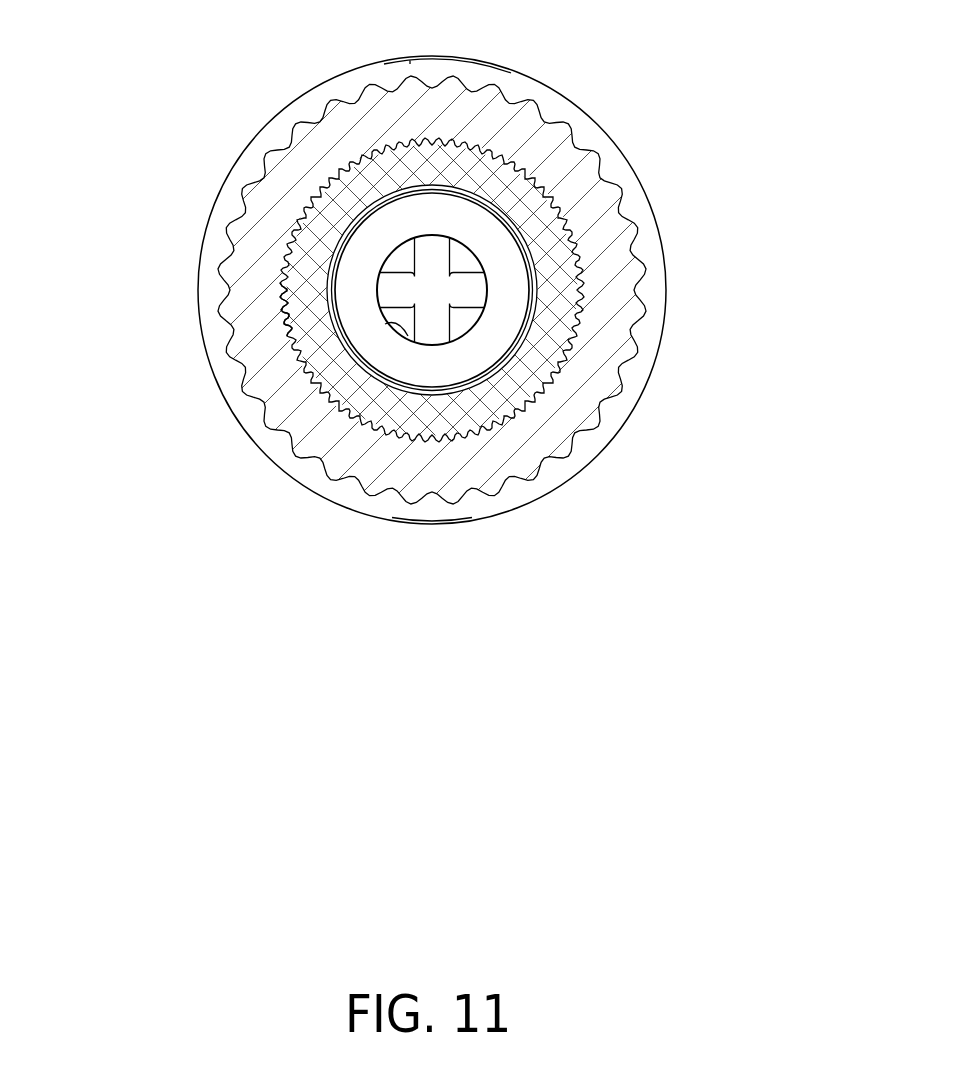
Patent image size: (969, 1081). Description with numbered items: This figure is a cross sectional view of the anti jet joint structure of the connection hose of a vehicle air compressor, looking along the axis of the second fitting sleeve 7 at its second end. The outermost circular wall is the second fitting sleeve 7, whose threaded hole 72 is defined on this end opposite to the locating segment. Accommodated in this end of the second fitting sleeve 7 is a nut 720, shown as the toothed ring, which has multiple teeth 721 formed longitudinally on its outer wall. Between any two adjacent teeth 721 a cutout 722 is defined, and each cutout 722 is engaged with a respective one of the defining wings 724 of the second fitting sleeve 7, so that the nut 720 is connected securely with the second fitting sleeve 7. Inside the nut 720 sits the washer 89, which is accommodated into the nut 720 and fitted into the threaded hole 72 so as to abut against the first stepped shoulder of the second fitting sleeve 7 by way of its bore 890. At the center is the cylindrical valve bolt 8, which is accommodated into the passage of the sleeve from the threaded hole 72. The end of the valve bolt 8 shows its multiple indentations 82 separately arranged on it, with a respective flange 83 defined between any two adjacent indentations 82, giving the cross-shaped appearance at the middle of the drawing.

The second fitting sleeve 7 is at (308, 143).
The valve bolt 8 is at (435, 292).
The threaded hole 72 is at (360, 333).
The nut 720 is at (310, 330).
The teeth 721 is at (283, 307).
The cutouts 722 is at (283, 307).
The defining wings 724 is at (283, 307).
The indentations 82 is at (457, 263).
The flanges 83 is at (435, 250).
The washer 89 is at (378, 232).
The bore 890 is at (390, 322).